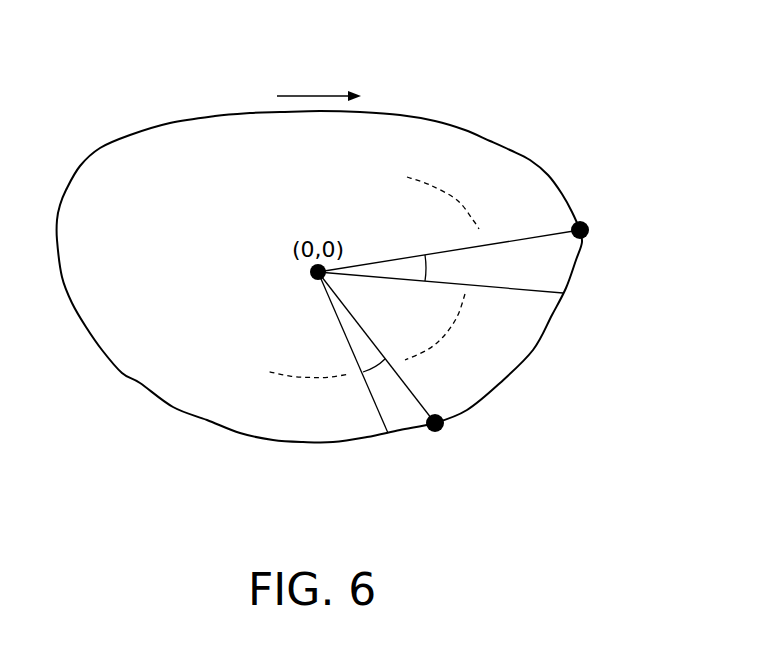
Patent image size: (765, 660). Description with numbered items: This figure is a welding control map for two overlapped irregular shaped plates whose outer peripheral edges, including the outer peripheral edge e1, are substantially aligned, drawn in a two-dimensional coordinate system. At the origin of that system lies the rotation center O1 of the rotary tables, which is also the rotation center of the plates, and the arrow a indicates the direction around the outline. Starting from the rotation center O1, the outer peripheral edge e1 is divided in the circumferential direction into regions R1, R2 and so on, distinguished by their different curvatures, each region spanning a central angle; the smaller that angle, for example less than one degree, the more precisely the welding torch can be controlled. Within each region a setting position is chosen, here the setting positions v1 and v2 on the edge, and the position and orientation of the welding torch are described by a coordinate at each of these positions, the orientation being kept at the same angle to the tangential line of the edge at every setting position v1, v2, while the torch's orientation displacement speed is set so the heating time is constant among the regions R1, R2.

The outer peripheral edge e1 is at (112, 143).
The direction of movement a is at (319, 85).
The rotation center O1 is at (314, 282).
The region R1 is at (532, 283).
The region R2 is at (420, 424).
The setting position v1 is at (588, 222).
The setting position v2 is at (443, 422).